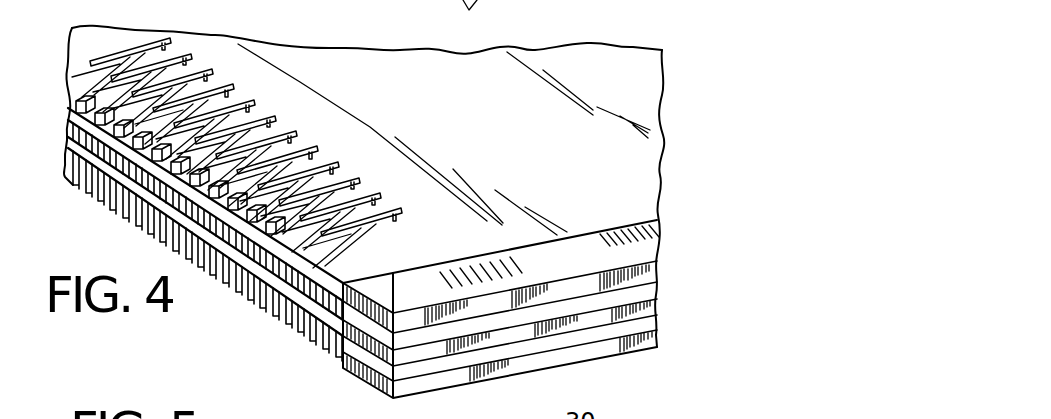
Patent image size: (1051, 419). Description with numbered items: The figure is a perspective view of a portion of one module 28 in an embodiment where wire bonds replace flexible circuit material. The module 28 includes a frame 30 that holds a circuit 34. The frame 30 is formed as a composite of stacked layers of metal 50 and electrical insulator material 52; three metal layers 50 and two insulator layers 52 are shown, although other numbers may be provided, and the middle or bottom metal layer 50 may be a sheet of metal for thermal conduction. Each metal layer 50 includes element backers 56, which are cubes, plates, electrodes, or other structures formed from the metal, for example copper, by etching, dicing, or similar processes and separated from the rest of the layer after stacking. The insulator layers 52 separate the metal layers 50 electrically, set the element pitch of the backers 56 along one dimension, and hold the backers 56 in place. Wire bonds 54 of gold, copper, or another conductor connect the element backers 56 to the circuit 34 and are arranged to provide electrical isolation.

The module 28 is at (303, 1).
The circuit 34 is at (380, 84).
The frame 30 is at (652, 288).
The metal layer 50 is at (590, 247).
The electrical insulator layer 52 is at (650, 284).
The wire bond 54 is at (199, 55).
The element backer 56 is at (135, 222).